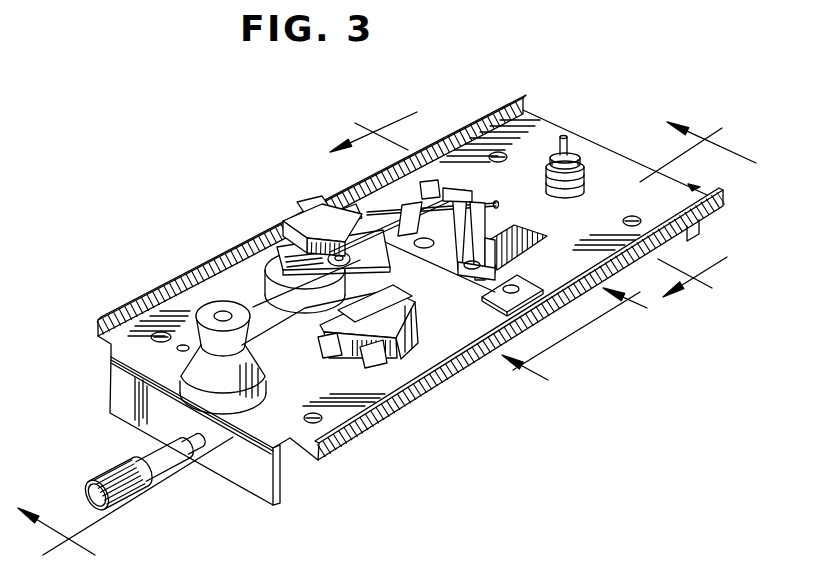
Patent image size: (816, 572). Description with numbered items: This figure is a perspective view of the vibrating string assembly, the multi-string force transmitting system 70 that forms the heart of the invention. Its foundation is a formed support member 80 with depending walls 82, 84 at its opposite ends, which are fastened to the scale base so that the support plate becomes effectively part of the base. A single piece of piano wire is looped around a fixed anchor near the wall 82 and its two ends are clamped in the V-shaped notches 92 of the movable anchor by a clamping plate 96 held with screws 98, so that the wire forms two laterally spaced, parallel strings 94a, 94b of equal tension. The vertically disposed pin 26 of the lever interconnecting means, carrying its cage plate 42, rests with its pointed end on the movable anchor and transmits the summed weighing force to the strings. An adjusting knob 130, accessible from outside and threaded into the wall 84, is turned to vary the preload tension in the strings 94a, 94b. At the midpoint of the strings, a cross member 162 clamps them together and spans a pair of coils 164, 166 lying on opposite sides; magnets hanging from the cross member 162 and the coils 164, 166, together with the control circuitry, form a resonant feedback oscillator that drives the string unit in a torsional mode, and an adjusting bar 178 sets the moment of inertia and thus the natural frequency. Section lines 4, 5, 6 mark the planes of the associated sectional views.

The section line 4- 4 is at (387, 347).
The section line 5- 5 is at (530, 199).
The section line 6- 6 is at (575, 342).
The pin 26 is at (566, 133).
The cage plate 42 is at (584, 152).
The multi-string force transmitting system 70 is at (290, 222).
The support member 80 is at (428, 396).
The depending wall 82 is at (281, 478).
The depending wall 84 is at (702, 229).
The V-shaped notches 92 is at (467, 191).
The string 94a is at (272, 332).
The string 94b is at (215, 282).
The clamping plate 96 is at (492, 198).
The screws 98 is at (505, 159).
The adjusting knob 130 is at (135, 491).
The cross member 162 is at (420, 297).
The coil 164 is at (421, 335).
The coil 166 is at (244, 251).
The adjusting bar 178 is at (281, 238).